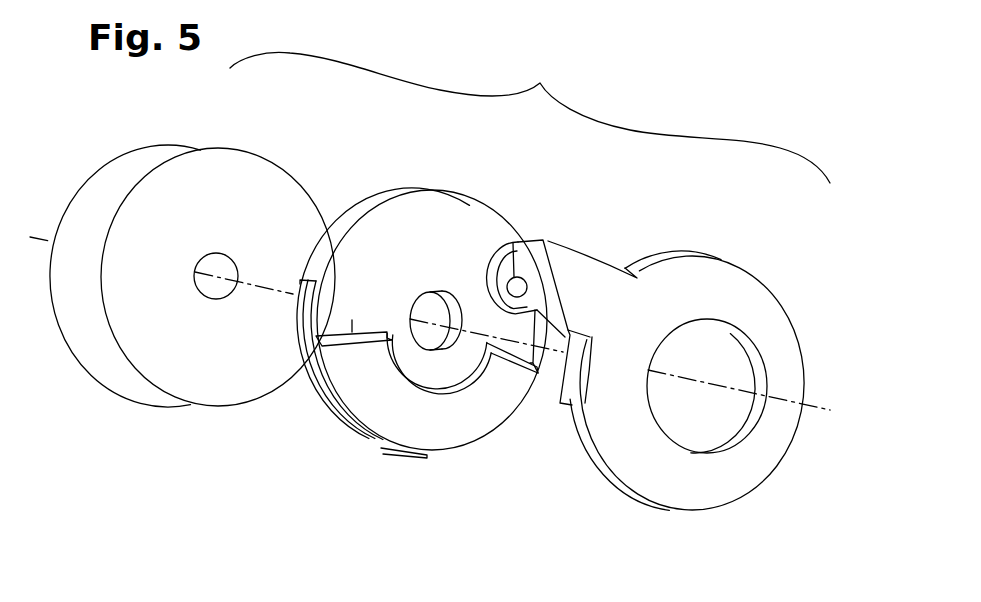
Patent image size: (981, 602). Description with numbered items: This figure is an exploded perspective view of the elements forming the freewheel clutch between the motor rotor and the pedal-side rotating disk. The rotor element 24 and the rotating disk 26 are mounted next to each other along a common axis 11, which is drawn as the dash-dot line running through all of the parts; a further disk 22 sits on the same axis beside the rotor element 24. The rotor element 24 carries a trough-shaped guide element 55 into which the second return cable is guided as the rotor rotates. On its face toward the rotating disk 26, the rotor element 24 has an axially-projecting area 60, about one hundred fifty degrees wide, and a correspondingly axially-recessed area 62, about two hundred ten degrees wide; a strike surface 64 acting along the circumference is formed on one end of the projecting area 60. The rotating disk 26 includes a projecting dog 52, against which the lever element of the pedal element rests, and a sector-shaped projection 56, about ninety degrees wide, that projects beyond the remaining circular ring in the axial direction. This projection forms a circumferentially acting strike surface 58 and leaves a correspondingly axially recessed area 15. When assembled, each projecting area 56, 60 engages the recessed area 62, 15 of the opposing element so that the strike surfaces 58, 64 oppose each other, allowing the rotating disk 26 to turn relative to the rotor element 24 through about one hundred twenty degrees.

The common axis 11 is at (37, 235).
The first disc 22 is at (155, 150).
The rotor element 24 is at (391, 186).
The axially-recessed area 62 is at (462, 218).
The axially-projecting area 60 is at (470, 432).
The strike surface 64 is at (330, 333).
The guide element 55 is at (384, 448).
The projecting dog 52 is at (516, 237).
The strike surface 58 is at (568, 407).
The sector-shaped projection 56 is at (643, 258).
The rotating disk 26 is at (743, 267).
The axially recessed area 15 is at (613, 493).